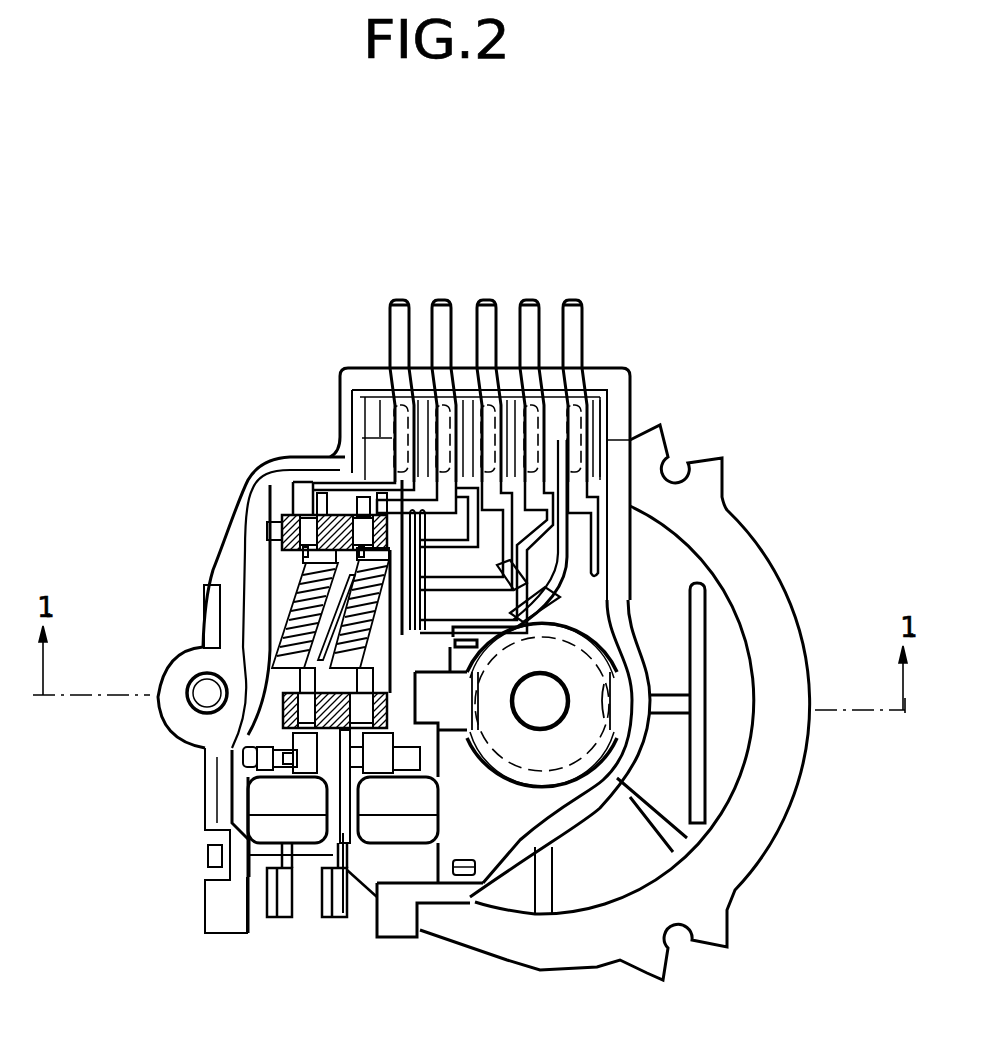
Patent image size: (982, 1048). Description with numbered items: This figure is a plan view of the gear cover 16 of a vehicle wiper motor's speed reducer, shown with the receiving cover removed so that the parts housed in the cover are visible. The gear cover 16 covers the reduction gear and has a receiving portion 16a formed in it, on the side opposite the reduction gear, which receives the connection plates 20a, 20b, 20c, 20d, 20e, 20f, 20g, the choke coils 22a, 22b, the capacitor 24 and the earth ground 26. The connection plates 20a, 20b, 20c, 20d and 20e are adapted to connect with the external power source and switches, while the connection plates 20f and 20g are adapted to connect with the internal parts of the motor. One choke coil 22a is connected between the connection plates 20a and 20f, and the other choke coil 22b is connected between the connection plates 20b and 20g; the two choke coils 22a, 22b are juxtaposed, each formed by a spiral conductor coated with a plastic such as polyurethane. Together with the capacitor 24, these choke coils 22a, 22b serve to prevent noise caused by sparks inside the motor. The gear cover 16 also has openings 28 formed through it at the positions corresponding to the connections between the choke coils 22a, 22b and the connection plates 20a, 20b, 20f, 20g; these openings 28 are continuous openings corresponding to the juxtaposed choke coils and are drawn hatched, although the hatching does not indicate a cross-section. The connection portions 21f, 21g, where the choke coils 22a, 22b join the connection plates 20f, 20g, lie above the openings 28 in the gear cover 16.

The gear cover 16 is at (777, 603).
The receiving portion 16a is at (283, 503).
The connection plate 20a is at (394, 298).
The connection plate 20b is at (438, 298).
The connection plate 20c is at (483, 298).
The connection plate 20d is at (539, 298).
The connection plate 20e is at (582, 298).
The connection plate 20f is at (277, 918).
The connection plate 20g is at (333, 918).
The connection portion 21f is at (230, 745).
The connection portion 21g is at (400, 745).
The choke coil 22a is at (300, 585).
The choke coil 22b is at (300, 655).
The capacitor 24 is at (277, 800).
The earth ground 26 is at (440, 735).
The openings 28 is at (317, 517).